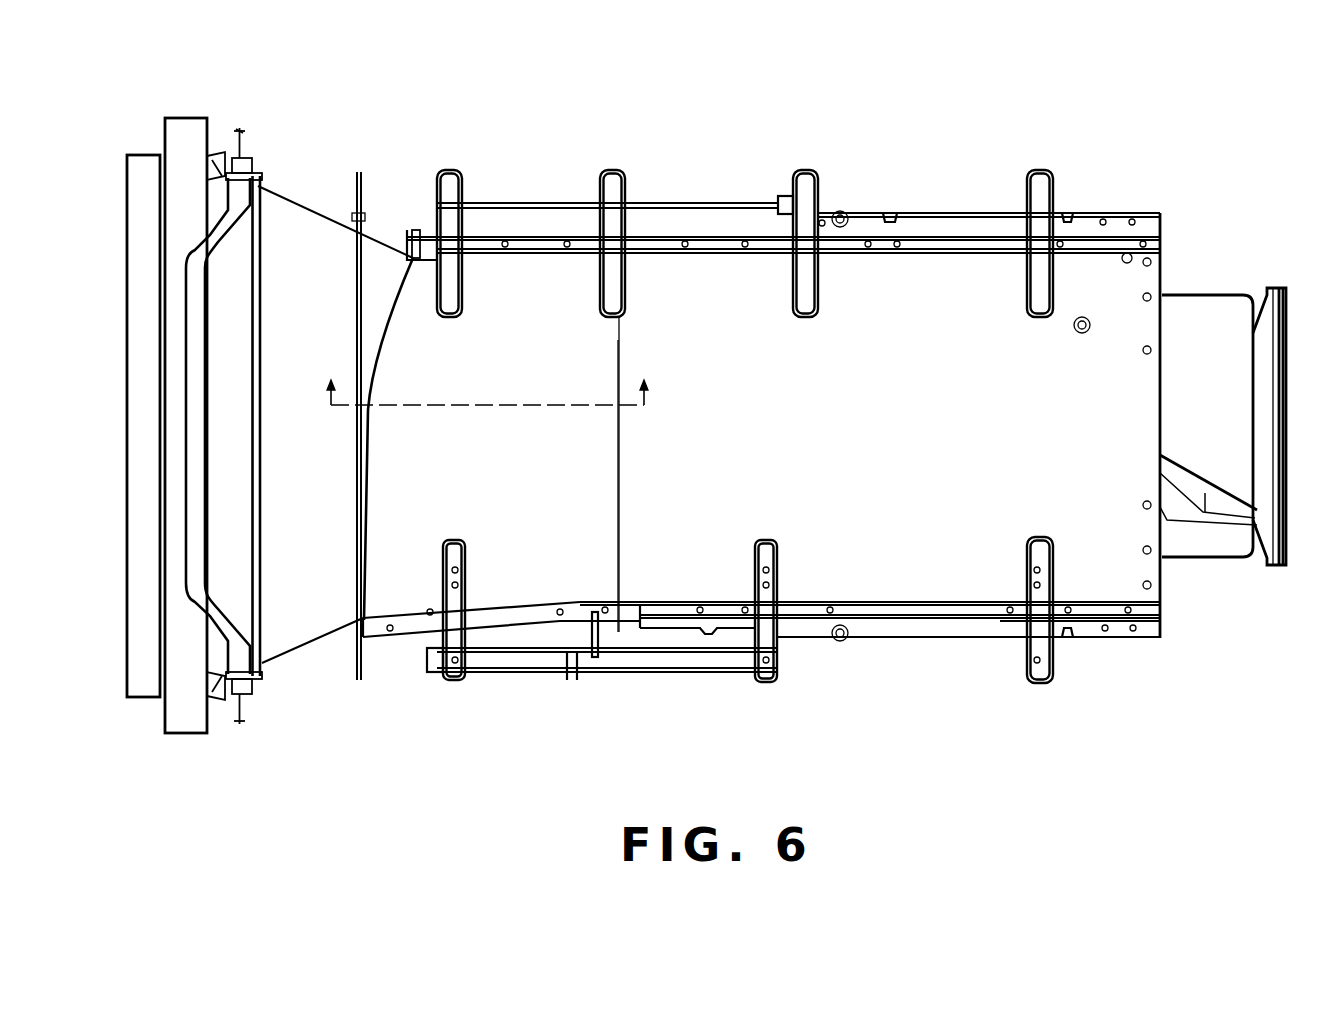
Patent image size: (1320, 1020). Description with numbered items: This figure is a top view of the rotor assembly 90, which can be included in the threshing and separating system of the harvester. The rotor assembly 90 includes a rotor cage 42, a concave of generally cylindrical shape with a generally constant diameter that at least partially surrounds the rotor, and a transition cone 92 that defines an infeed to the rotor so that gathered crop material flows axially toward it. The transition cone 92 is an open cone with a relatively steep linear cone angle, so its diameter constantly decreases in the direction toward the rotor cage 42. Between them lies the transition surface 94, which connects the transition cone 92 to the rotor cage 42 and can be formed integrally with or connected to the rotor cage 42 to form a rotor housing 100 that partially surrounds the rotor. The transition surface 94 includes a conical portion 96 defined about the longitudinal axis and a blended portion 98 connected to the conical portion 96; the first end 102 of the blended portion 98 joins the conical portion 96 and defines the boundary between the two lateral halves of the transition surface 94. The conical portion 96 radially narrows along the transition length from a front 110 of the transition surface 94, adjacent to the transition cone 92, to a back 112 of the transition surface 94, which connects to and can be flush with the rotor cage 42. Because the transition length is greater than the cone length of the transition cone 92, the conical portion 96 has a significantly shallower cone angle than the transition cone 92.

The rotor assembly 90 is at (824, 381).
The rotor cage 42 is at (762, 262).
The rotor housing 100 is at (628, 232).
The transition cone 92 is at (332, 232).
The transition surface 94 is at (590, 342).
The back of the transition surface 112 is at (620, 353).
The first end of the blended portion 102 is at (515, 402).
The front of the transition surface 110 is at (375, 420).
The blended portion 98 is at (531, 336).
The conical portion 96 is at (531, 489).